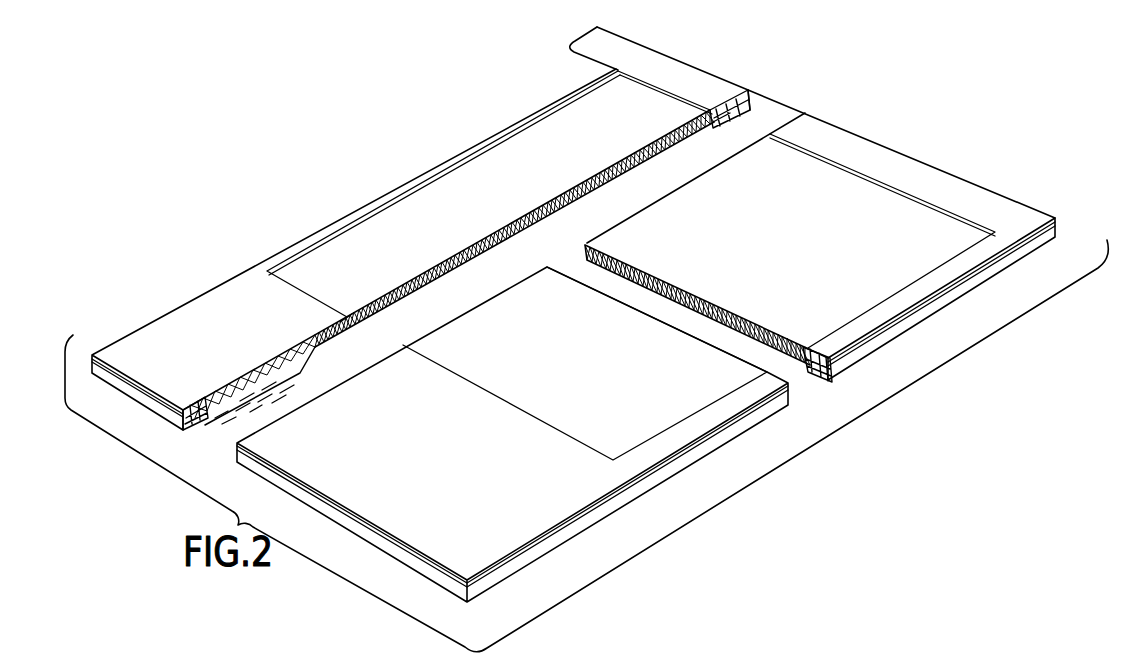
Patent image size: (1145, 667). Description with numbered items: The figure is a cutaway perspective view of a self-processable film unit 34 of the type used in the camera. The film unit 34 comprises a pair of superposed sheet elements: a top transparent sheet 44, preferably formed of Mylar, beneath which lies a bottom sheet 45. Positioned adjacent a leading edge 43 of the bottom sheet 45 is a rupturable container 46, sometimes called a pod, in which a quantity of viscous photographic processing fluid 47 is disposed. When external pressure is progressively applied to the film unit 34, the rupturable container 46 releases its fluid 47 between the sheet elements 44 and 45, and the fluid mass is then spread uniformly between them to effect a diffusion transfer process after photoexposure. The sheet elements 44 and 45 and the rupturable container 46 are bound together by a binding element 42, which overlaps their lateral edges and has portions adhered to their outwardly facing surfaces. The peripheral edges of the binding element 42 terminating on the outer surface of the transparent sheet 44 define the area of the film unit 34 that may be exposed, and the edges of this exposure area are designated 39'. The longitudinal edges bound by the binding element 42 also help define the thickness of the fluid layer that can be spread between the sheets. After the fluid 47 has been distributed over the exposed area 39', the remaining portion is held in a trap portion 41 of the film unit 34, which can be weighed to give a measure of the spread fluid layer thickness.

The trap portion 41 is at (587, 33).
The edges of the exposure area 39' is at (631, 248).
The binding element 42 is at (311, 236).
The film unit 34 is at (948, 165).
The leading edge 43 is at (346, 325).
The top transparent sheet 44 is at (662, 152).
The bottom sheet 45 is at (613, 182).
The rupturable container 46 is at (294, 378).
The viscous photographic processing fluid 47 is at (228, 413).